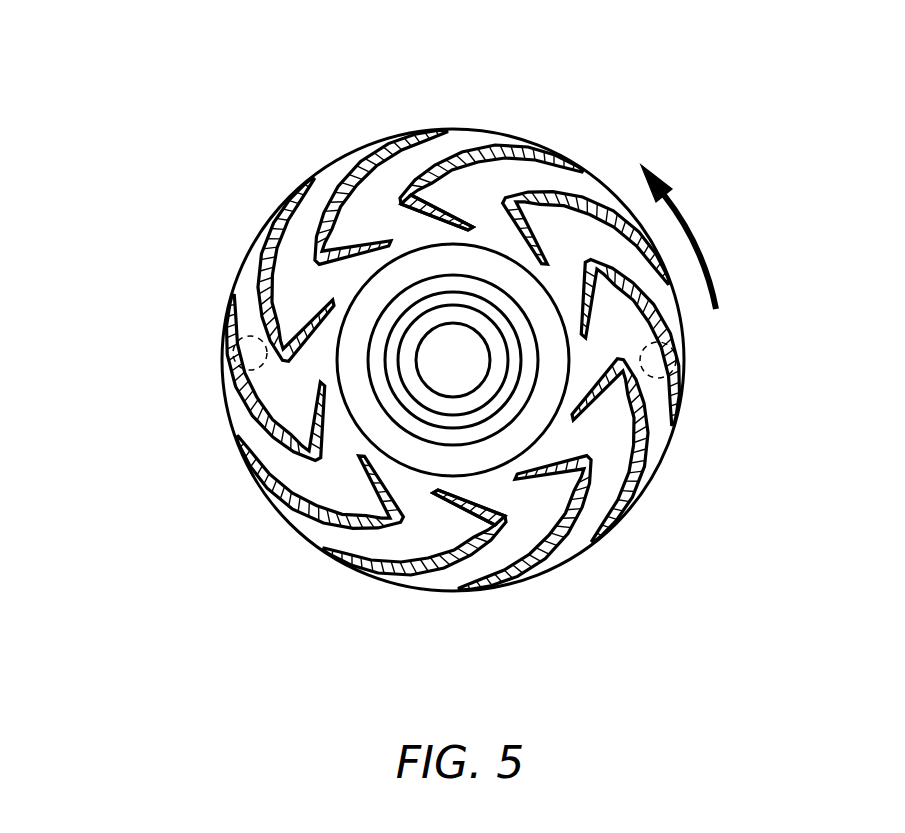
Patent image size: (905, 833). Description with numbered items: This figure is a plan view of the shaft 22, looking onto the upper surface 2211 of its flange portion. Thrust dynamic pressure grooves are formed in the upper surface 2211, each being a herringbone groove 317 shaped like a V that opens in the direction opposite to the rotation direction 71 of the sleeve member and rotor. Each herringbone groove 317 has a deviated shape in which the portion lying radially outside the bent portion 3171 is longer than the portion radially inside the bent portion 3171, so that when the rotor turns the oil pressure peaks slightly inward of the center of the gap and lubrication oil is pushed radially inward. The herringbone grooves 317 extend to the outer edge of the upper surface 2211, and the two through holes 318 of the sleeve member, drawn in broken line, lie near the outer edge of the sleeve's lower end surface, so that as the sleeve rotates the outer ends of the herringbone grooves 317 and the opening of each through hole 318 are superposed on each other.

The shaft 22 is at (105, 89).
The upper surface 2211 is at (250, 296).
The herringbone groove 317 is at (513, 148).
The bent portion 3171 is at (398, 194).
The through hole 318 is at (235, 364).
The rotation direction 71 is at (697, 235).